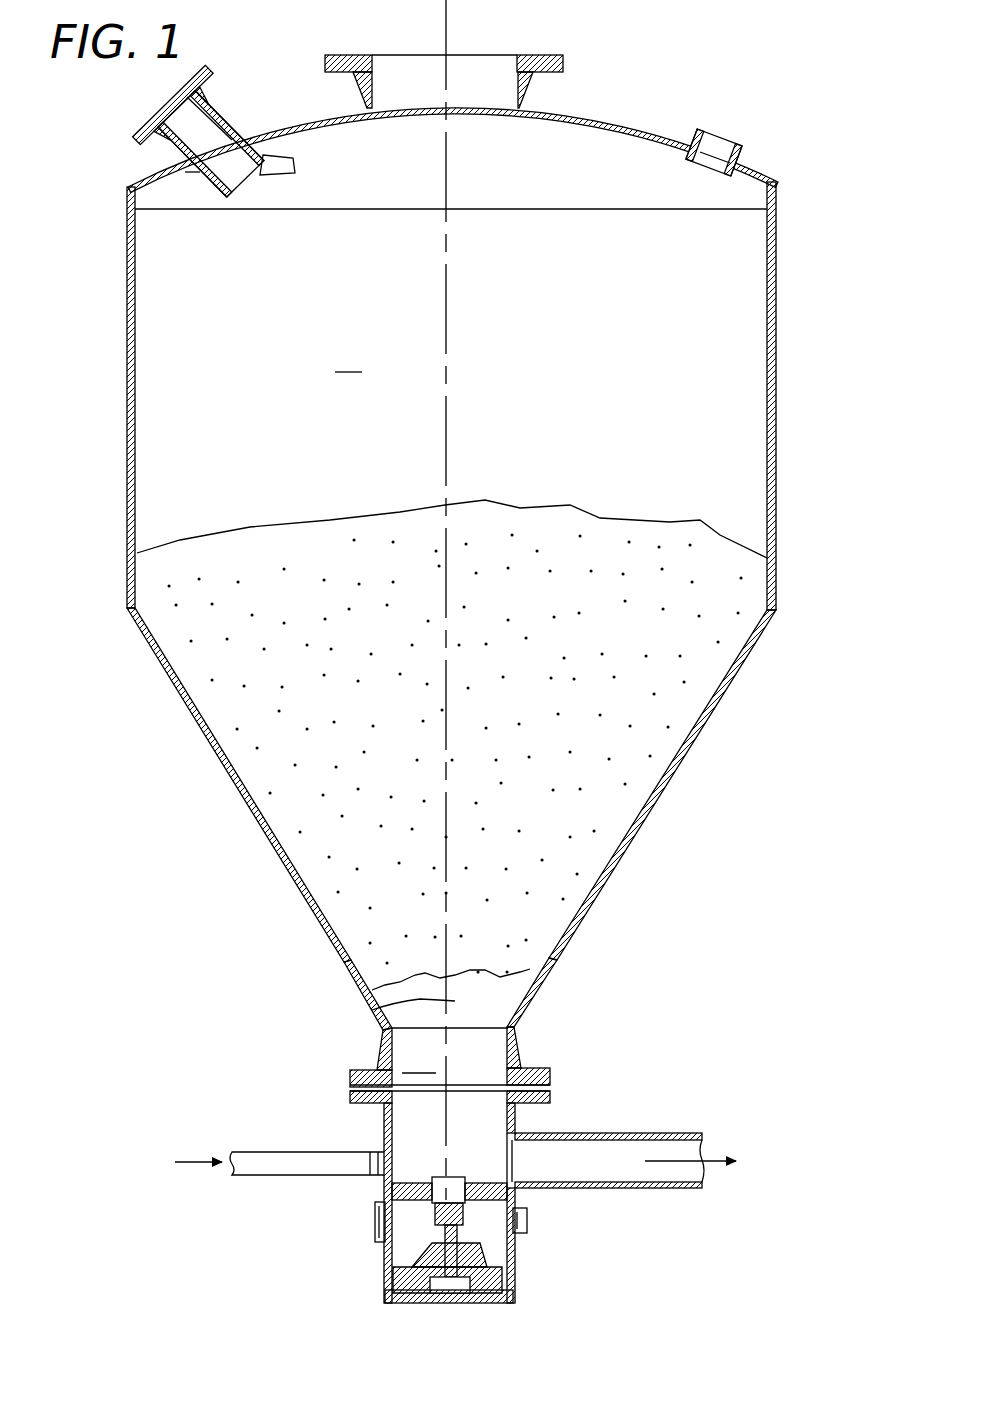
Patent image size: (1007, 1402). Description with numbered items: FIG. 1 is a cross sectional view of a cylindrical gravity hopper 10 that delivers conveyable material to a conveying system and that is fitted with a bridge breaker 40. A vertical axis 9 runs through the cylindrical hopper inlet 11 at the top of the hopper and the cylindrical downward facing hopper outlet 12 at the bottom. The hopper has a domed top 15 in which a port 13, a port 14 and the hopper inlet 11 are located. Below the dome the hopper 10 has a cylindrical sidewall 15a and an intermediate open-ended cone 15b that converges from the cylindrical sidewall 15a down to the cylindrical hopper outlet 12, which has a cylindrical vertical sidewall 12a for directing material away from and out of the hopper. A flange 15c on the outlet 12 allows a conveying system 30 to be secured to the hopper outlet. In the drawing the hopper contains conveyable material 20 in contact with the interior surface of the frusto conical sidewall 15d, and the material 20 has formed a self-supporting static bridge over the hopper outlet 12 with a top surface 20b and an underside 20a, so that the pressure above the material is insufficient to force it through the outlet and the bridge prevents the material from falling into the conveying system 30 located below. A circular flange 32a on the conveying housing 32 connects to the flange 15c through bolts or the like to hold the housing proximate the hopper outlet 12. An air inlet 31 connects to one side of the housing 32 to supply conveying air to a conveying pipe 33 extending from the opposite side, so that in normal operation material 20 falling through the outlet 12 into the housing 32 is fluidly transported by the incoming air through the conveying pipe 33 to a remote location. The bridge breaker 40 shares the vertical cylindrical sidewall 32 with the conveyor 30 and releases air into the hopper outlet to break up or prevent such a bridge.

The vertical axis 9 is at (446, 12).
The gravity hopper 10 is at (720, 85).
The hopper inlet 11 is at (563, 57).
The hopper outlet 12 is at (521, 1060).
The cylindrical vertical sidewall 12a is at (515, 1060).
The port 13 is at (128, 133).
The port 14 is at (742, 147).
The domed top 15 is at (613, 118).
The cylindrical sidewall 15a is at (777, 422).
The intermediate open-ended cone 15b is at (640, 826).
The flange 15c is at (372, 1068).
The frusto conical sidewall 15d is at (522, 1003).
The conveyable material 20 is at (515, 727).
The underside 20a is at (375, 1010).
The top surface 20b is at (538, 508).
The conveying system 30 is at (570, 1119).
The air inlet 31 is at (303, 1177).
The conveying housing 32 is at (383, 1130).
The circular flange 32a is at (350, 1097).
The conveying pipe 33 is at (607, 1188).
The bridge breaker 40 is at (362, 1277).